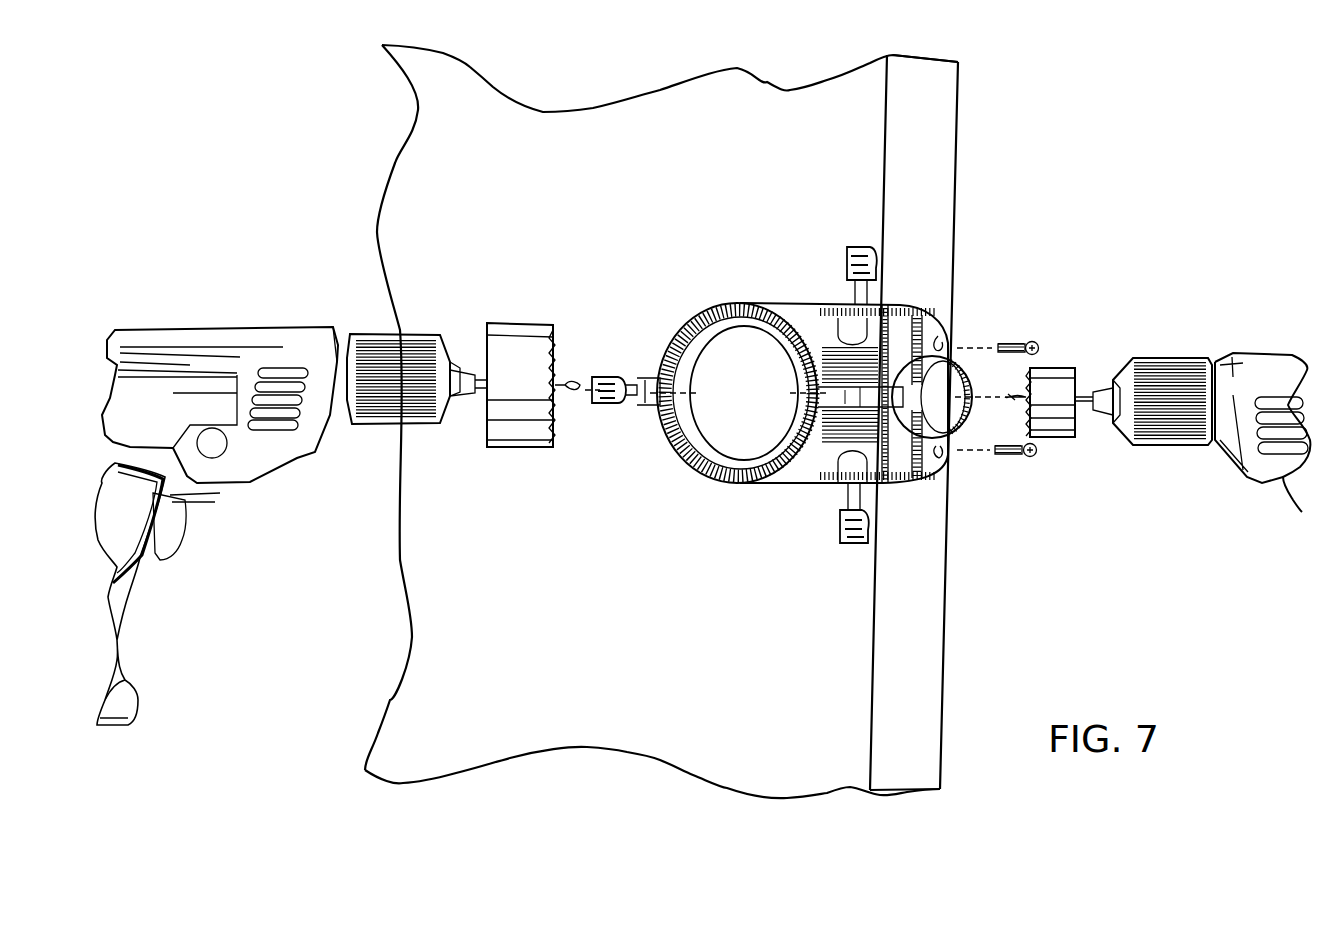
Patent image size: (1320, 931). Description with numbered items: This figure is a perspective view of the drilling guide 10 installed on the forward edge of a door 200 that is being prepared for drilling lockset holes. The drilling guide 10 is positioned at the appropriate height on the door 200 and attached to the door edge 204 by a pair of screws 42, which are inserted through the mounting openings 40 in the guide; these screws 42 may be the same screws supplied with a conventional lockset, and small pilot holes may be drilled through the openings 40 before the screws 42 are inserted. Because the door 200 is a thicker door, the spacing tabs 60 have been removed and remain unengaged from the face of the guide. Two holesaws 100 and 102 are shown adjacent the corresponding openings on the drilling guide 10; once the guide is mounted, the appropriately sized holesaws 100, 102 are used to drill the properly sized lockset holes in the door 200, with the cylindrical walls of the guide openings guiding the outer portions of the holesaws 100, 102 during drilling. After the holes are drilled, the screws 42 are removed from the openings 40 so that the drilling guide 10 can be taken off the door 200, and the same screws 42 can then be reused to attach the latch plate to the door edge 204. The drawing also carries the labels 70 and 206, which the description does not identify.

The drilling guide 10 is at (720, 282).
The mounting openings 40 is at (936, 337).
The screws 42 is at (1028, 343).
The spacing tabs 60 is at (860, 248).
The shafts 70 is at (852, 298).
The holesaw 100 is at (545, 320).
The holesaw 102 is at (1055, 440).
The door 200 is at (835, 120).
The door edge 204 is at (930, 122).
The door face 206 is at (680, 125).